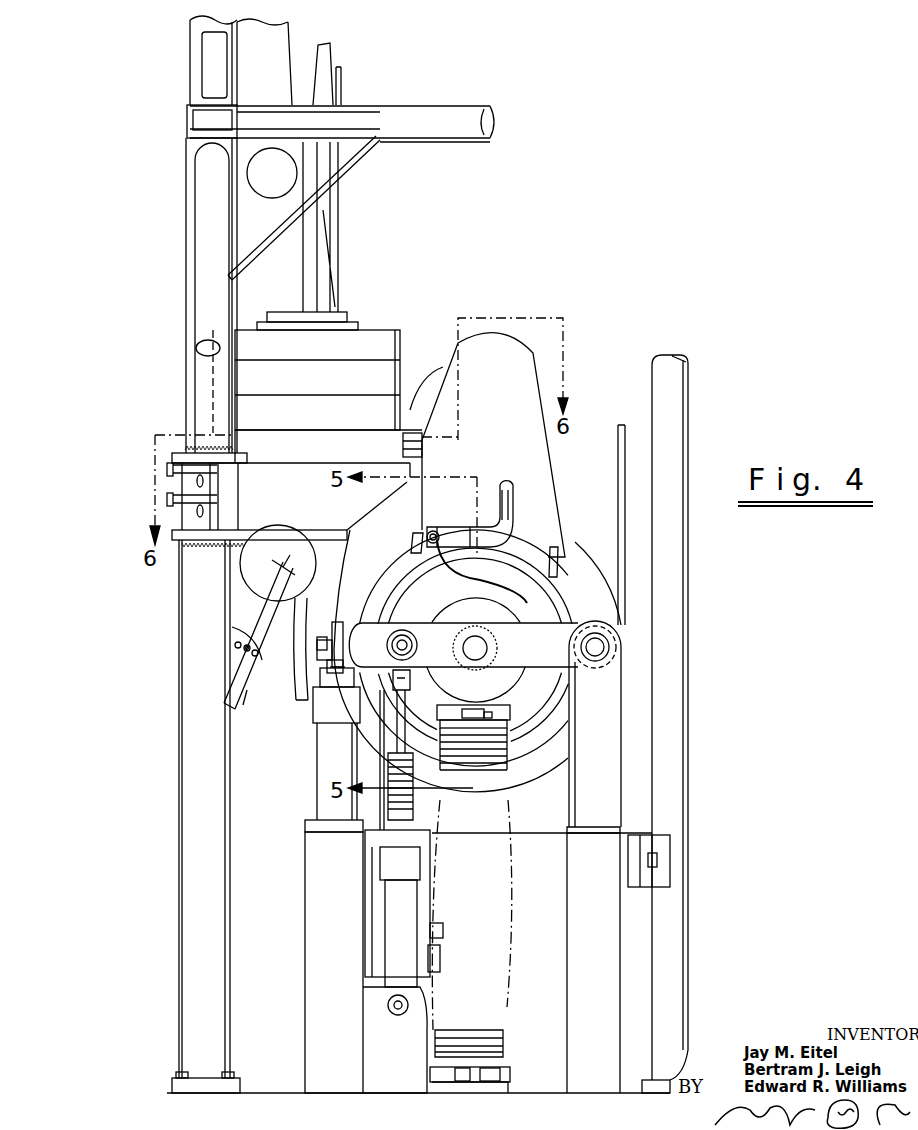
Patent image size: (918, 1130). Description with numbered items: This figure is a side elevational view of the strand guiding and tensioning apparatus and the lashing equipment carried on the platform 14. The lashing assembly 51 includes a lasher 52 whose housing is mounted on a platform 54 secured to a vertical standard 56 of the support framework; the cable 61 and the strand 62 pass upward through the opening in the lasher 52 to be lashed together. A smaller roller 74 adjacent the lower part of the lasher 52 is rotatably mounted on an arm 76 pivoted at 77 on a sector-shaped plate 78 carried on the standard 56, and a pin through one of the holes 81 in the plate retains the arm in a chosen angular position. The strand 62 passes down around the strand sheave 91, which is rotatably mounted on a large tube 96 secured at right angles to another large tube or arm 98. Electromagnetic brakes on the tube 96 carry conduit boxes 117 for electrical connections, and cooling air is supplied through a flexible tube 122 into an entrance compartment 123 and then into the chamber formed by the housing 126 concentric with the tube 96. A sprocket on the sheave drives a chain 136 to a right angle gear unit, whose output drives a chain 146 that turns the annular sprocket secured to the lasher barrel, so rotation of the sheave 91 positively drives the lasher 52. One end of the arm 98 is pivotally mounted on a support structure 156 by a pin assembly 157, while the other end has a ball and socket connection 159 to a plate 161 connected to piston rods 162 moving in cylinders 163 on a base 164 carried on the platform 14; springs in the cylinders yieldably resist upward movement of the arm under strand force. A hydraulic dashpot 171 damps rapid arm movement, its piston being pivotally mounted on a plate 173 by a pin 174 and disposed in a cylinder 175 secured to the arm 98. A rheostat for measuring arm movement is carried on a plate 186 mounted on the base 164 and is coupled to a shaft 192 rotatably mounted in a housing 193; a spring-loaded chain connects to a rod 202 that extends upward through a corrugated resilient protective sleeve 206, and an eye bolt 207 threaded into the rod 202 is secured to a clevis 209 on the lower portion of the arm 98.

The platform 14 is at (265, 1091).
The lashing assembly 51 is at (377, 272).
The lasher 52 is at (377, 343).
The platform 54 is at (315, 463).
The vertical standard 56 is at (190, 668).
The cable 61 is at (297, 620).
The strand 62 is at (618, 465).
The roller 74 is at (280, 571).
The arm 76 is at (253, 600).
The pivot 77 is at (235, 649).
The sector-shaped plate 78 is at (247, 692).
The holes 81 is at (263, 656).
The strand sheave 91 is at (605, 572).
The tube 96 is at (477, 631).
The tube or arm 98 is at (535, 655).
The conduit boxes 117 is at (461, 537).
The flexible tube 122 is at (506, 993).
The entrance compartment 123 is at (490, 695).
The housing 126 is at (514, 620).
The chain 136 is at (563, 570).
The chain 146 is at (405, 458).
The support structure 156 is at (600, 757).
The pin assembly 157 is at (598, 647).
The ball and socket connection 159 is at (323, 652).
The plate 161 is at (338, 622).
The piston rods 162 is at (325, 671).
The cylinders 163 is at (330, 747).
The base 164 is at (310, 853).
The hydraulic dashpot 171 is at (385, 889).
The plate 173 is at (380, 1025).
The pin 174 is at (388, 1004).
The cylinder 175 is at (432, 878).
The plate 186 is at (430, 968).
The shaft 192 is at (405, 905).
The housing 193 is at (430, 953).
The rod 202 is at (400, 732).
The corrugated resilient protective sleeve 206 is at (415, 818).
The eye bolt 207 is at (397, 690).
The clevis 209 is at (412, 678).